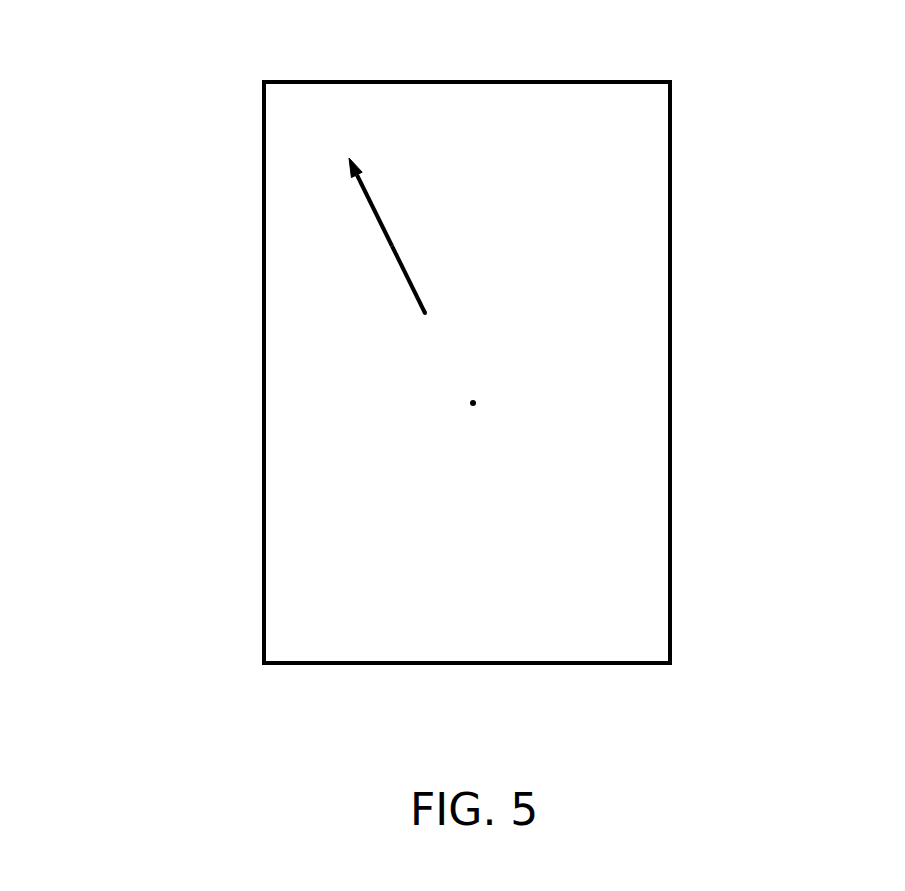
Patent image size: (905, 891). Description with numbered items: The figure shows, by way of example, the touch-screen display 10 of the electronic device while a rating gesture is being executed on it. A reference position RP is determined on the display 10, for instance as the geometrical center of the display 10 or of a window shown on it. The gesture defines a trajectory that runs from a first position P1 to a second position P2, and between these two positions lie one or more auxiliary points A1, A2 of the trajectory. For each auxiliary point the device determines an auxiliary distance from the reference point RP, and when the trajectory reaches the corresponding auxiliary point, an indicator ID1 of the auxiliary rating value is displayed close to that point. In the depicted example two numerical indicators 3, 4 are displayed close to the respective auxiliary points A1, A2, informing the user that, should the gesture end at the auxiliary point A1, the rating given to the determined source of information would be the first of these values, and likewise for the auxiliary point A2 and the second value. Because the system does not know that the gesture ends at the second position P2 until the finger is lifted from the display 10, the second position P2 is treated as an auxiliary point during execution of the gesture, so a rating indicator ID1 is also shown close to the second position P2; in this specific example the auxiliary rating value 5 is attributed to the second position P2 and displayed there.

The touch-screen display 10 is at (262, 438).
The reference position RP is at (473, 403).
The first position P1 is at (425, 313).
The second position P2 is at (348, 158).
The auxiliary point A1 is at (408, 276).
The auxiliary point A2 is at (377, 219).
The indicator ID1 is at (437, 260).
The numerical indicator 3 is at (424, 272).
The numerical indicator 4 is at (399, 208).
The auxiliary rating value 5 is at (369, 148).